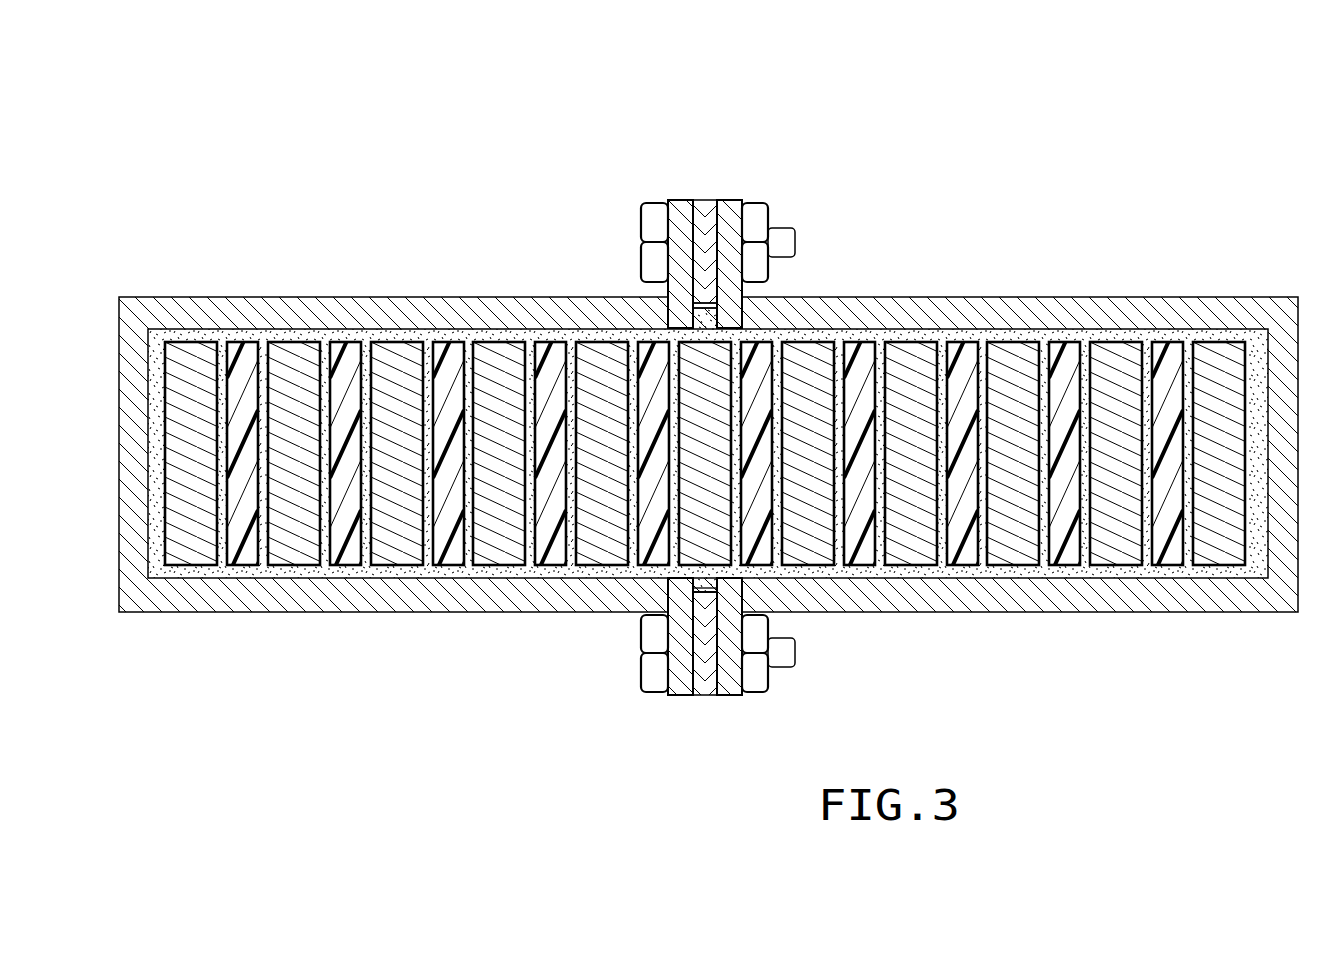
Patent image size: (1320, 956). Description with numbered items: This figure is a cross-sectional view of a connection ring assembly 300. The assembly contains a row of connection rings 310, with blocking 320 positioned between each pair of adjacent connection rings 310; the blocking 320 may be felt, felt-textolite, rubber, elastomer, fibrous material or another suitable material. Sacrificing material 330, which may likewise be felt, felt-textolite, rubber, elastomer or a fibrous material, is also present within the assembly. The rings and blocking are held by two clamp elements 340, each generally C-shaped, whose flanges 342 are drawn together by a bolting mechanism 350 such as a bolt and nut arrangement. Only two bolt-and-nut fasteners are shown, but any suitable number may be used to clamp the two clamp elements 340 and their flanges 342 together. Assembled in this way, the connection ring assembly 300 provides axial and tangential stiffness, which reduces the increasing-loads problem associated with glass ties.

The connection ring assembly 300 is at (708, 421).
The connection rings 310 is at (1119, 513).
The blocking 320 is at (1158, 341).
The sacrificing material 330 is at (262, 543).
The clamp elements 340 is at (215, 315).
The flanges 342 is at (728, 217).
The bolting mechanism 350 is at (638, 216).